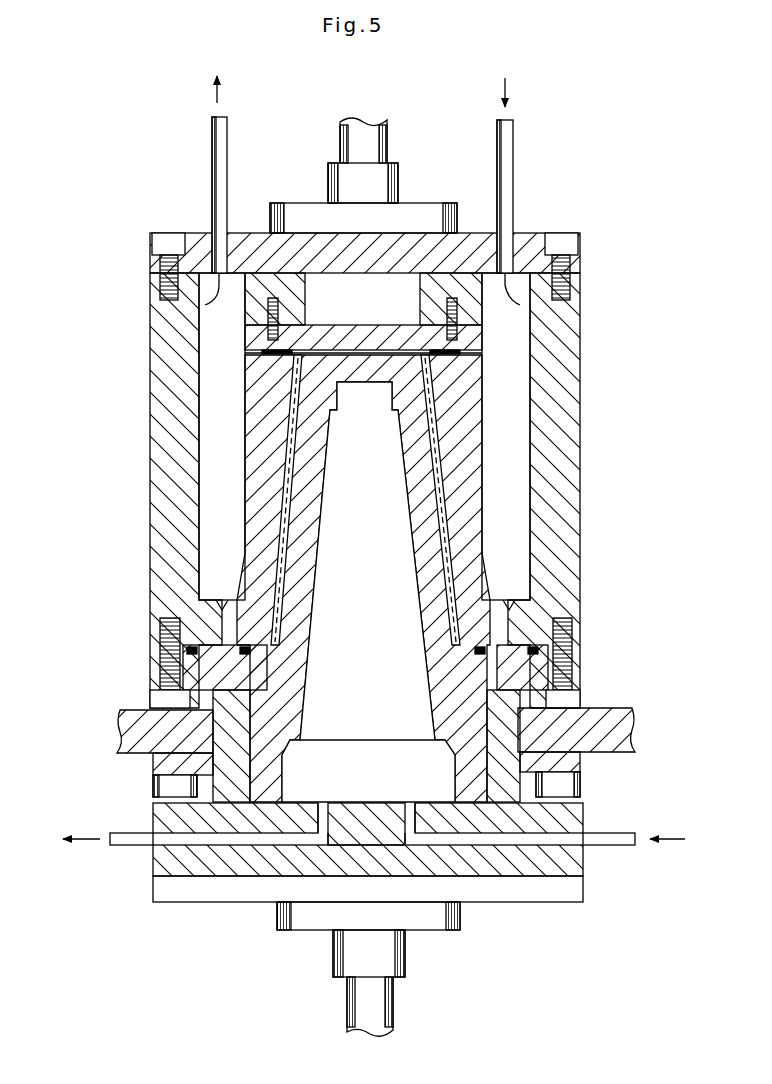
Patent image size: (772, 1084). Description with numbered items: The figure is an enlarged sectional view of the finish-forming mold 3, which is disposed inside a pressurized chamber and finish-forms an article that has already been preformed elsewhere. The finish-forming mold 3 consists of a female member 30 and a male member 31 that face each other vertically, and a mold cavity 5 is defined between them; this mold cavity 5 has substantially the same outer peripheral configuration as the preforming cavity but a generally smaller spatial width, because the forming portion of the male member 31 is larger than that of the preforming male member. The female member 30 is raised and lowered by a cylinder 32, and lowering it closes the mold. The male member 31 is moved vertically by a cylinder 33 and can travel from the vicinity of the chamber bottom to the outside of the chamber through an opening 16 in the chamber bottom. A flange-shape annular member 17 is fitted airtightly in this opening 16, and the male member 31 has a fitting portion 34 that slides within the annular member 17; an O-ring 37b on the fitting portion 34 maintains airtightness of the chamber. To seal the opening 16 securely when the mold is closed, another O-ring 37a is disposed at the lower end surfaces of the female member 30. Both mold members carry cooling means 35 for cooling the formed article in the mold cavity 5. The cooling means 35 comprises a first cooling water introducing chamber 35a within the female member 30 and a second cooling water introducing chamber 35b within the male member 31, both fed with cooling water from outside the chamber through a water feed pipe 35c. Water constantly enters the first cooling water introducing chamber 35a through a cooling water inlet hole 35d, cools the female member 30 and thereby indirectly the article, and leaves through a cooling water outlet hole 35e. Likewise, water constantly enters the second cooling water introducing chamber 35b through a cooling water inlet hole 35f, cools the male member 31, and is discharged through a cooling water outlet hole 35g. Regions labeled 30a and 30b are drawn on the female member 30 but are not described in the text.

The finish-forming mold 3 is at (592, 200).
The mold cavity 5 is at (414, 424).
The opening 16 is at (223, 755).
The flange-shape annular member 17 is at (515, 760).
The female member 30 is at (551, 374).
The annular cavity 30a is at (470, 465).
The liner 30b is at (452, 517).
The male member 31 is at (541, 862).
The cylinder 32 is at (388, 126).
The cylinder 33 is at (380, 1006).
The fitting portion 34 is at (500, 812).
The cooling means 35 is at (87, 413).
The first cooling water introducing chamber 35a is at (220, 408).
The second cooling water introducing chamber 35b is at (348, 488).
The water feed pipe 35c is at (507, 188).
The cooling water inlet hole 35d is at (506, 276).
The cooling water outlet hole 35e is at (218, 287).
The cooling water inlet hole 35f is at (508, 840).
The cooling water outlet hole 35g is at (232, 840).
The O-ring 37a is at (570, 662).
The O-ring 37b is at (217, 712).